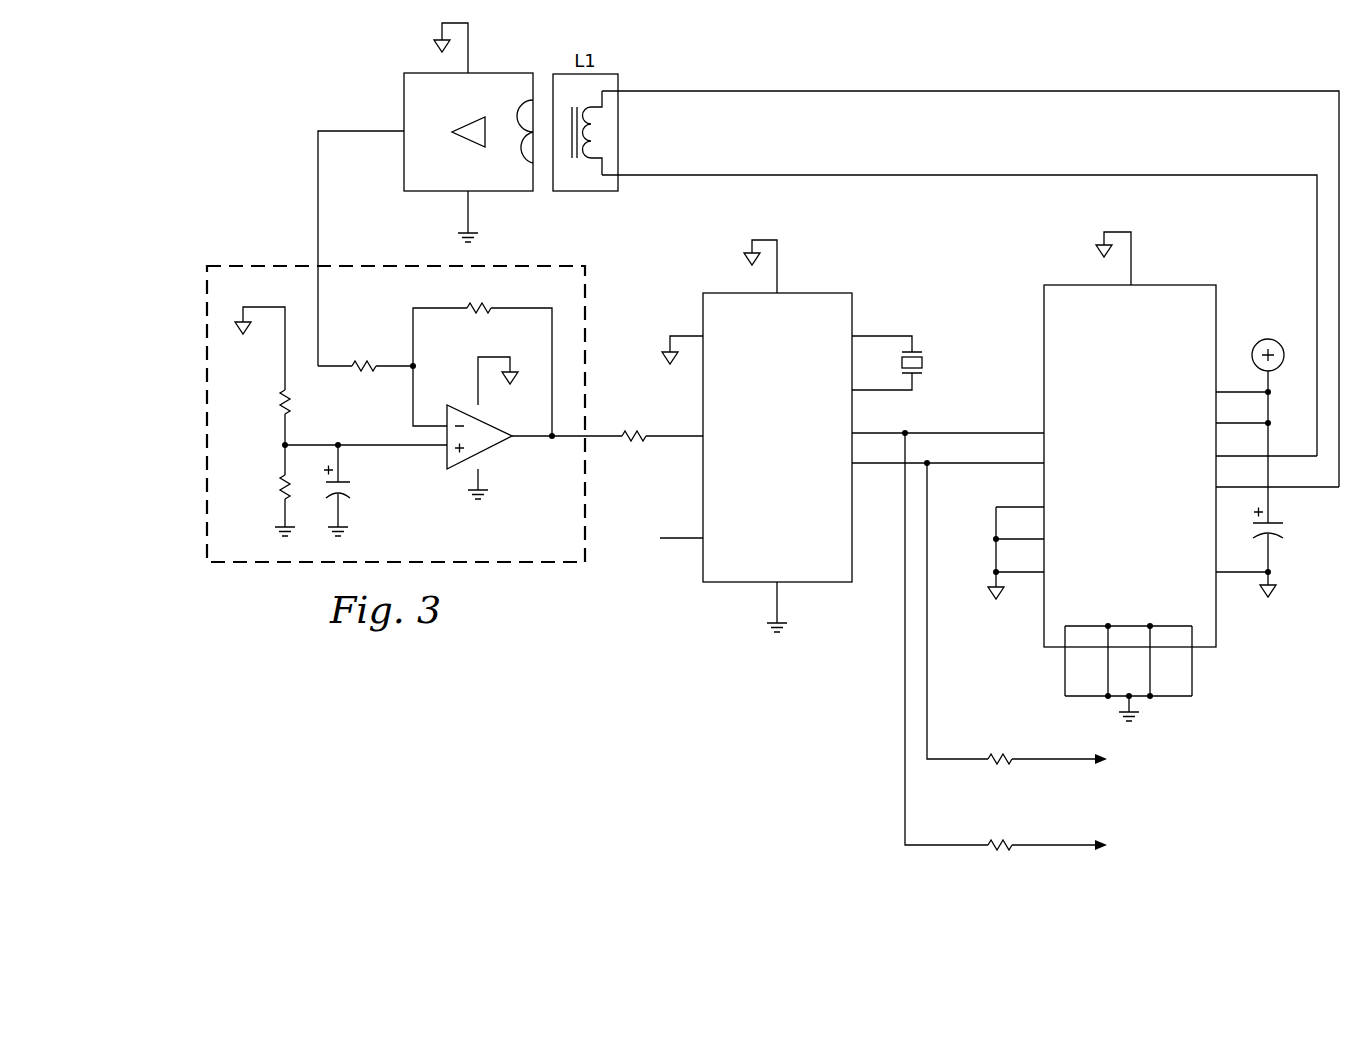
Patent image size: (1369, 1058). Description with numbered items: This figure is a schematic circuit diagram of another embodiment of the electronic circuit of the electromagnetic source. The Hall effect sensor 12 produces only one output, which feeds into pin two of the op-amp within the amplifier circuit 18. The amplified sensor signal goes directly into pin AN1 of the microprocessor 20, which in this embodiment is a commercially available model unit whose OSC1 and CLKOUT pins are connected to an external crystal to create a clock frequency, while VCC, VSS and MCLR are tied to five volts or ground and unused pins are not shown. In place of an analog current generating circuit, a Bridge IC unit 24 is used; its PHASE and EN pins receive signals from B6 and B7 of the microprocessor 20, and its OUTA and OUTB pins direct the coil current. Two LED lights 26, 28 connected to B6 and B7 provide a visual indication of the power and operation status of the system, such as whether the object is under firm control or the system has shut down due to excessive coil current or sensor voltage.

The Hall effect sensor 12 is at (368, 91).
The amplifier circuit 18 is at (264, 243).
The microprocessor 20 is at (738, 602).
The Bridge IC unit 24 is at (1198, 268).
The LED light 26 is at (1232, 762).
The LED light 28 is at (1232, 848).